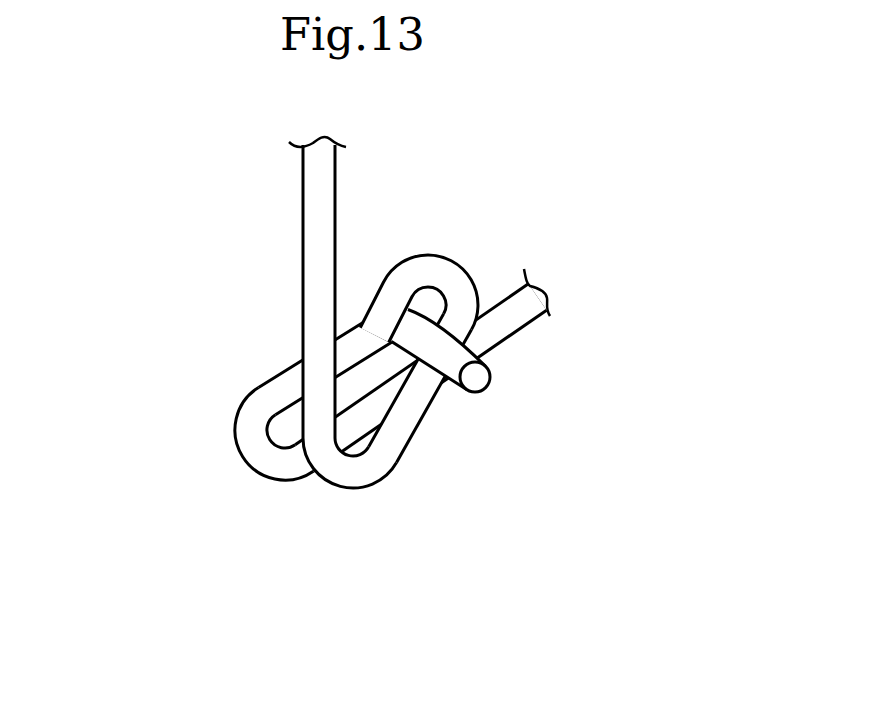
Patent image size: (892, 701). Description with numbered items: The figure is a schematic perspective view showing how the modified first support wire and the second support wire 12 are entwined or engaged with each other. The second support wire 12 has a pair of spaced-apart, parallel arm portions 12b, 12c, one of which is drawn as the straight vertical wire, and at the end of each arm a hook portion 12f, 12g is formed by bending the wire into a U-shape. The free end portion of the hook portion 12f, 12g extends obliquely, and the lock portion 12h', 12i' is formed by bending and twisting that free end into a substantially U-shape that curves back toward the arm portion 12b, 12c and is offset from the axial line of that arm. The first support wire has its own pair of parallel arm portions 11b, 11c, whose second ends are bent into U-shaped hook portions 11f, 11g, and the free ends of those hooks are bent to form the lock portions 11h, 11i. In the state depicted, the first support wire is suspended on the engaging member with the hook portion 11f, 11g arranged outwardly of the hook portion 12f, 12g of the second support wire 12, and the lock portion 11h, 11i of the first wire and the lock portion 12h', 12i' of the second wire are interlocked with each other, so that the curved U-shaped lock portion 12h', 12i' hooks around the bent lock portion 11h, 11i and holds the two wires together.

The second support wire 12 is at (418, 391).
The arm portion 12b is at (210, 291).
The arm portion 12c is at (303, 272).
The lock portion 12h' is at (555, 256).
The lock portion 12i' is at (555, 256).
The hook portion 12f is at (296, 541).
The hook portion 12g is at (352, 488).
The arm portion 11b is at (526, 377).
The arm portion 11c is at (521, 327).
The hook portion 11f is at (178, 468).
The hook portion 11g is at (234, 430).
The lock portion 11h is at (471, 452).
The lock portion 11i is at (488, 387).